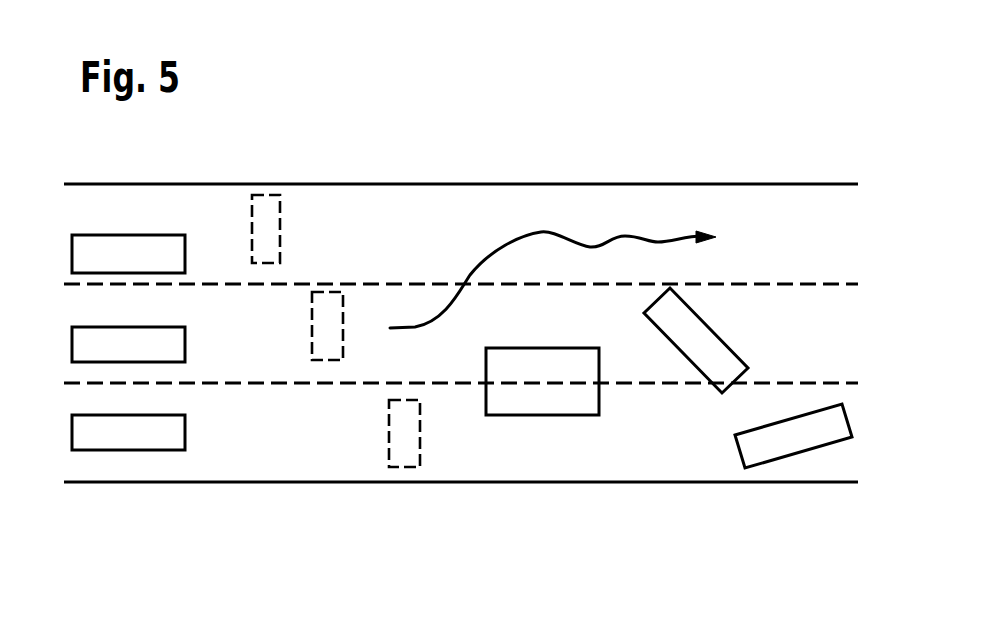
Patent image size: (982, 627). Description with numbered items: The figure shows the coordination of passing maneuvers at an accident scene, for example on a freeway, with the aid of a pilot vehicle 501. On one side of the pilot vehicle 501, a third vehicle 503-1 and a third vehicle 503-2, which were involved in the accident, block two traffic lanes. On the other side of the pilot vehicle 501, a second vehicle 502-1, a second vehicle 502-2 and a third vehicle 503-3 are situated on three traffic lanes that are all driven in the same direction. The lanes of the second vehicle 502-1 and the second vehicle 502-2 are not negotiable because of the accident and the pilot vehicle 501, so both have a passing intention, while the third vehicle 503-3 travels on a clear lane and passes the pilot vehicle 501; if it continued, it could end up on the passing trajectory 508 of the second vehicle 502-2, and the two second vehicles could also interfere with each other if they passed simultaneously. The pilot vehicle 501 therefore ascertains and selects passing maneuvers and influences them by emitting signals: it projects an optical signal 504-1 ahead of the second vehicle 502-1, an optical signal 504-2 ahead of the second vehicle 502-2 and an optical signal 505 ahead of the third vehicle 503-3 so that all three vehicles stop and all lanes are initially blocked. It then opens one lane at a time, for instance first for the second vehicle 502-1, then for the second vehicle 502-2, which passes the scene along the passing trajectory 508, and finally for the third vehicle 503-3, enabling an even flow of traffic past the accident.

The pilot vehicle 501 is at (540, 415).
The second vehicle 502-1 is at (128, 450).
The second vehicle 502-2 is at (185, 345).
The third vehicle 503-1 is at (777, 462).
The third vehicle 503-2 is at (702, 373).
The third vehicle 503-3 is at (127, 235).
The optical signal 504-1 is at (396, 467).
The optical signal 504-2 is at (320, 292).
The optical signal 505 is at (255, 195).
The passing trajectory 508 is at (541, 232).